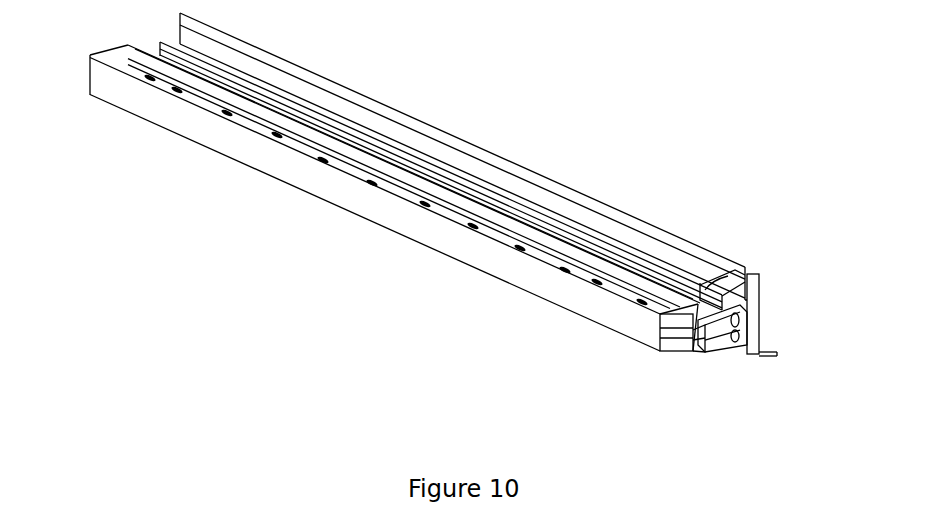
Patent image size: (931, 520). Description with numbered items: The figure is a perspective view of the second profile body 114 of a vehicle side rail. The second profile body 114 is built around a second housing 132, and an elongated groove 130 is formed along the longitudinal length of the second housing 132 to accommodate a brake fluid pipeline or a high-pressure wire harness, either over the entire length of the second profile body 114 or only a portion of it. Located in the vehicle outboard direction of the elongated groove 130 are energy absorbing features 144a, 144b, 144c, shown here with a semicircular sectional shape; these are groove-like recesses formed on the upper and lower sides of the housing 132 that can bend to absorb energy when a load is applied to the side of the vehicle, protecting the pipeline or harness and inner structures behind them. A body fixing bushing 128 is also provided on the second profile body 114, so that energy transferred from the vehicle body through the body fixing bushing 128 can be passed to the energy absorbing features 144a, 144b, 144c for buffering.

The second profile body 114 is at (568, 128).
The body fixing bushing 128 is at (323, 165).
The elongated groove 130 is at (748, 276).
The second housing 132 is at (545, 256).
The energy absorbing feature 144a is at (700, 283).
The energy absorbing feature 144b is at (728, 352).
The energy absorbing feature 144c is at (693, 352).